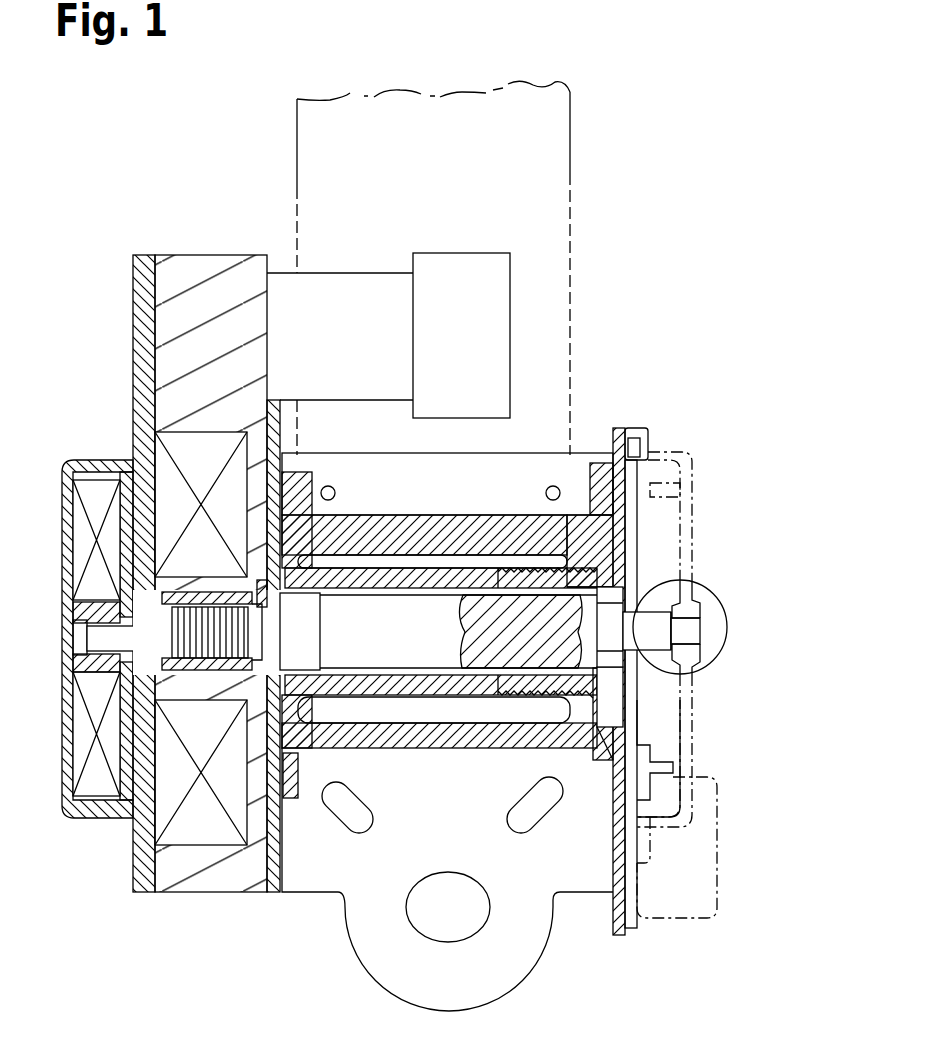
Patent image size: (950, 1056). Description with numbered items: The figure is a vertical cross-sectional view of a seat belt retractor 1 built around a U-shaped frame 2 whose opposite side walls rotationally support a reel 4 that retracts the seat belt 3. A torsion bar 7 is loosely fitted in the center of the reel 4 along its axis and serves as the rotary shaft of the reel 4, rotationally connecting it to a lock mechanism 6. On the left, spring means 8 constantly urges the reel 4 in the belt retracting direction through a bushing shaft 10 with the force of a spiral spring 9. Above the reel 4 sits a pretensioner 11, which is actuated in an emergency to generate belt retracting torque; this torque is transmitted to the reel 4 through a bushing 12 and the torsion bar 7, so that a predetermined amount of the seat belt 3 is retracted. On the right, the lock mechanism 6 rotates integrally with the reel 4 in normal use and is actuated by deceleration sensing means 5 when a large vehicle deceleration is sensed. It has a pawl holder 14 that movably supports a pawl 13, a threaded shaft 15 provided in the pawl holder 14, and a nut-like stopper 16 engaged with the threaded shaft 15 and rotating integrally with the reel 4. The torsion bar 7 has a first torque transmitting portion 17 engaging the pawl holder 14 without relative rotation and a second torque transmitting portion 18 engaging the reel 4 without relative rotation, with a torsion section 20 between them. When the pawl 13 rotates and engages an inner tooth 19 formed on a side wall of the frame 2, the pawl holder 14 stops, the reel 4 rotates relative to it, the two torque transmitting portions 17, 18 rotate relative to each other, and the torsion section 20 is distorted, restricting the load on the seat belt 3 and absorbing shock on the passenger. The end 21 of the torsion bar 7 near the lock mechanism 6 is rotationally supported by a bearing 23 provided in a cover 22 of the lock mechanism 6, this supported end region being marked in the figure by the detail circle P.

The seat belt retractor 1 is at (160, 208).
The U-shaped frame 2 is at (335, 883).
The seat belt 3 is at (565, 187).
The reel 4 is at (482, 523).
The deceleration sensing means 5 is at (722, 862).
The lock mechanism 6 is at (672, 446).
The torsion bar 7 is at (412, 608).
The spring means 8 is at (62, 780).
The spiral spring 9 is at (83, 538).
The bushing shaft 10 is at (90, 665).
The pretensioner 11 is at (480, 298).
The bushing 12 is at (133, 460).
The pawl 13 is at (612, 790).
The pawl holder 14 is at (620, 778).
The threaded shaft 15 is at (572, 570).
The nut-like stopper 16 is at (497, 700).
The first torque transmitting portion 17 is at (613, 600).
The second torque transmitting portion 18 is at (303, 640).
The inner tooth 19 is at (618, 777).
The torsion section 20 is at (442, 613).
The end 21 is at (678, 628).
The cover 22 is at (692, 510).
The bearing 23 is at (692, 608).
The detail circle P is at (728, 627).